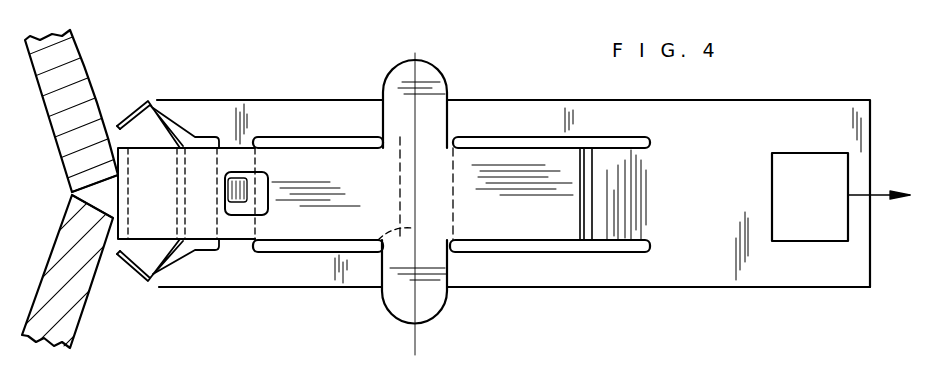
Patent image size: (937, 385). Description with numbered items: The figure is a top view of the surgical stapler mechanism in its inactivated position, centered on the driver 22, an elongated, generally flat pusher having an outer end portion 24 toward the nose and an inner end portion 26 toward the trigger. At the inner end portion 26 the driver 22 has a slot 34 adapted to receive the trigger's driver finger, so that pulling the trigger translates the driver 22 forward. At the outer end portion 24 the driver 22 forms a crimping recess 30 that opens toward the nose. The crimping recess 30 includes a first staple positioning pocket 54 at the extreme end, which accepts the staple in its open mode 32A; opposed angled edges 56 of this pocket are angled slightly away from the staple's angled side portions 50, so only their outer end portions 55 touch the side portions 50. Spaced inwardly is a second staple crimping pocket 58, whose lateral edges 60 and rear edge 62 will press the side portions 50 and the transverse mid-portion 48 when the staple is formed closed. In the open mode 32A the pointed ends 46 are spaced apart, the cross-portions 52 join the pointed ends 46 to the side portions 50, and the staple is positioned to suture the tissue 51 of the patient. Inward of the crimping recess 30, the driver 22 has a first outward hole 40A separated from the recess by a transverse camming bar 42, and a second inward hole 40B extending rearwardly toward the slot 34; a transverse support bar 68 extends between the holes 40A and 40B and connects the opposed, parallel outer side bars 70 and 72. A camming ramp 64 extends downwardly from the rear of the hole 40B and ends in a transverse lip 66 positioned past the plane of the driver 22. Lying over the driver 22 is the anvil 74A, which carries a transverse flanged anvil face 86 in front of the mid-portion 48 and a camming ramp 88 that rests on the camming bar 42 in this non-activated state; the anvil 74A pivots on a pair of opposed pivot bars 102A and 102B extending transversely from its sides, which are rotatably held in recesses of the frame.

The driver 22 is at (570, 108).
The outer end portion 24 is at (189, 190).
The inner end portion 26 is at (842, 278).
The crimping recess 30 is at (214, 249).
The open mode of staple 32A is at (128, 104).
The slot 34 is at (772, 208).
The first outward hole 40A is at (350, 137).
The second inward hole 40B is at (540, 137).
The transverse camming bar 42 is at (245, 157).
The pointed ends 46 is at (118, 127).
The transverse mid-portion 48 is at (177, 178).
The side portions 50 is at (182, 115).
The tissue 51 is at (58, 228).
The cross-portions 52 is at (143, 100).
The first staple positioning pocket 54 is at (165, 223).
The end portions of angled edges 55 is at (163, 97).
The angled edges 56 is at (202, 125).
The second staple crimping pocket 58 is at (212, 216).
The lateral edges 60 is at (216, 126).
The rear edge 62 is at (218, 228).
The camming ramp 64 is at (640, 195).
The transverse lip 66 is at (597, 153).
The transverse support bar 68 is at (368, 257).
The outer side bar 70 is at (497, 106).
The outer side bar 72 is at (500, 276).
The anvil 74A is at (452, 206).
The anvil face 86 is at (88, 178).
The camming ramp 88 is at (238, 195).
The pivot bar 102A is at (421, 76).
The pivot bar 102B is at (427, 313).